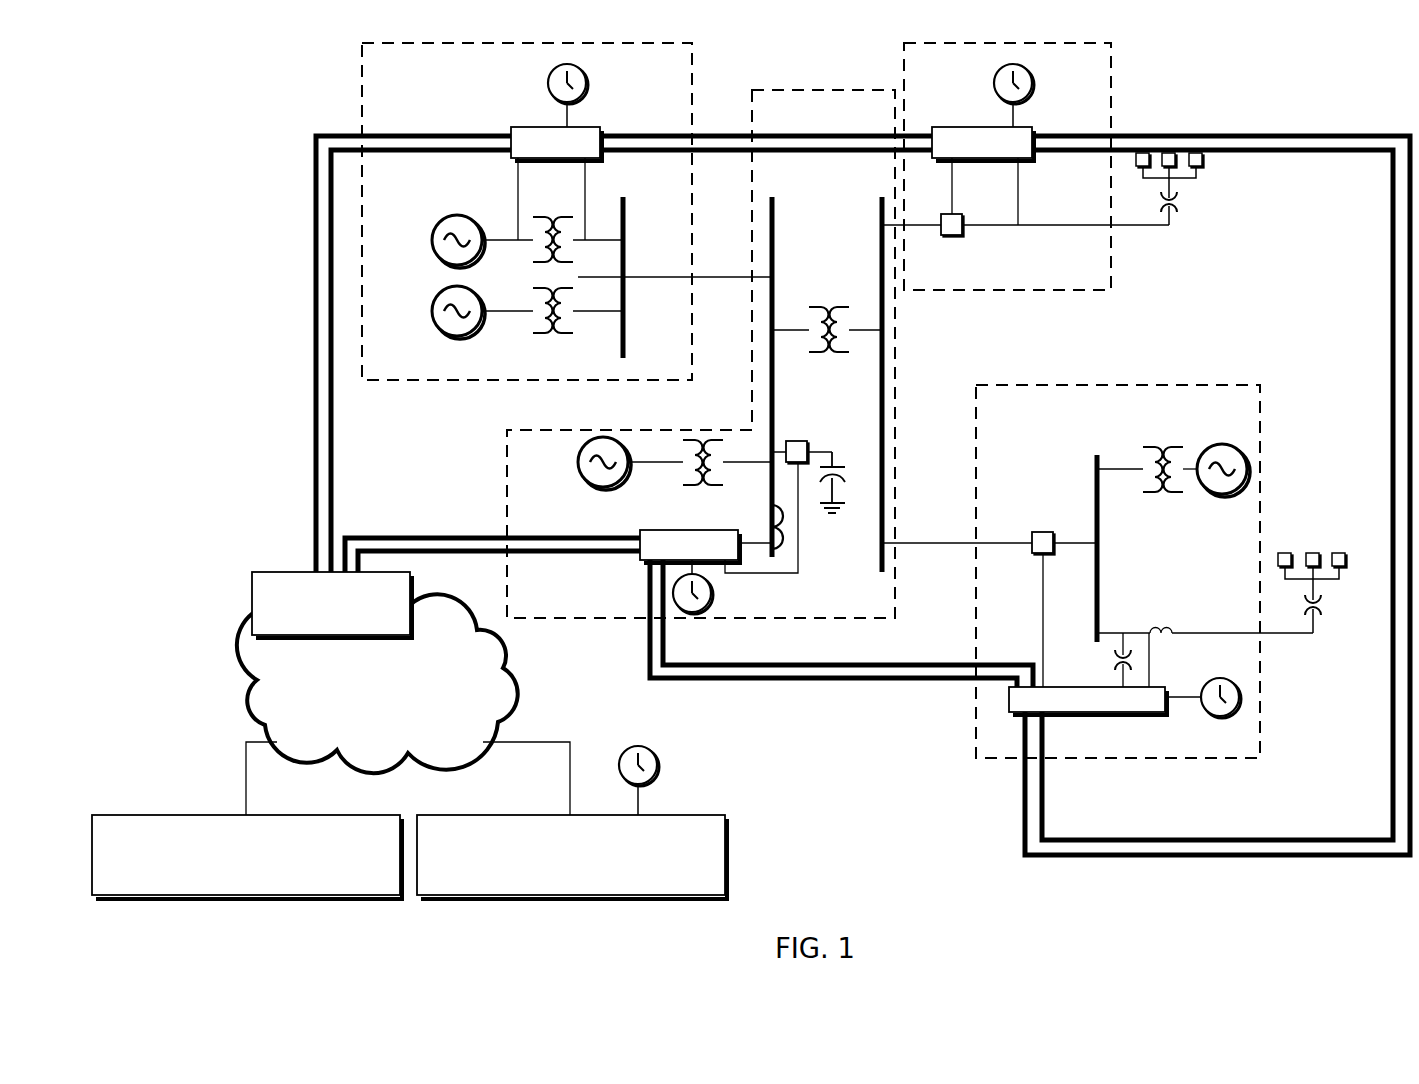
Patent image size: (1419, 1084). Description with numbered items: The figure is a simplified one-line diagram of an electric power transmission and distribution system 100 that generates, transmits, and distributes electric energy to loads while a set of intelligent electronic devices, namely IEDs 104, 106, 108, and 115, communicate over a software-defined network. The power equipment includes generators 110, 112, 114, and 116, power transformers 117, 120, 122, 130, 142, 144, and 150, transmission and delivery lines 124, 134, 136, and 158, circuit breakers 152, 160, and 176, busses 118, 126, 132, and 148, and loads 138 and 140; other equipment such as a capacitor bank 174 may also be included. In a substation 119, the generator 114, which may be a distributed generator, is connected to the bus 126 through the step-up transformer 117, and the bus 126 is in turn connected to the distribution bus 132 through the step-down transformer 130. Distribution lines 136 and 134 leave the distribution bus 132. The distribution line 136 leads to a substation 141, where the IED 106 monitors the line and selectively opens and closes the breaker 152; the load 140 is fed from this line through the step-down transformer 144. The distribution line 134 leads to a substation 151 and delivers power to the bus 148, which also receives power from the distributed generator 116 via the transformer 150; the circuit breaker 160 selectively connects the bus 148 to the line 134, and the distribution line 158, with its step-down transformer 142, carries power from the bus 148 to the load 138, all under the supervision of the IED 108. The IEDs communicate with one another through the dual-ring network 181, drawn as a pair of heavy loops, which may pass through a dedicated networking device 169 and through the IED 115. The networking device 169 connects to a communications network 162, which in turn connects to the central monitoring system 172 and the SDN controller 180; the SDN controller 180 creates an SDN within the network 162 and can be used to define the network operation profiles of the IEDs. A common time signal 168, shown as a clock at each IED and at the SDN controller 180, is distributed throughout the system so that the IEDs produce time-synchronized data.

The electric power transmission and distribution system 100 is at (182, 95).
The IED 104 is at (528, 126).
The IED 106 is at (968, 126).
The IED 108 is at (1140, 712).
The generator 110 is at (432, 237).
The generator 112 is at (432, 310).
The generator 114 is at (578, 468).
The IED 115 is at (718, 530).
The distributed generator 116 is at (1205, 490).
The step-up transformer 117 is at (683, 478).
The bus 118 is at (625, 332).
The substation 119 is at (566, 618).
The power transformer 120 is at (533, 257).
The power transformer 122 is at (560, 335).
The power transmission and delivery line 124 is at (711, 278).
The bus 126 is at (776, 352).
The step-down transformer 130 is at (828, 310).
The distribution bus 132 is at (880, 530).
The distribution line 134 is at (990, 545).
The distribution line 136 is at (925, 228).
The load 138 is at (1313, 554).
The load 140 is at (1203, 158).
The substation 141 is at (1085, 290).
The step-down transformer 142 is at (1322, 614).
The step-down transformer 144 is at (1178, 203).
The bus 148 is at (1095, 458).
The transformer 150 is at (1160, 448).
The substation 151 is at (1189, 758).
The breaker 152 is at (963, 238).
The distribution line 158 is at (1193, 630).
The circuit breaker 160 is at (1033, 533).
The communications network 162 is at (377, 675).
The common time signal 168 is at (587, 84).
The dedicated networking device 169 is at (283, 572).
The central monitoring system 172 is at (247, 857).
The capacitor bank 174 is at (840, 468).
The breaker 176 is at (803, 441).
The SDN controller 180 is at (572, 857).
The dual-ring network 181 is at (312, 297).